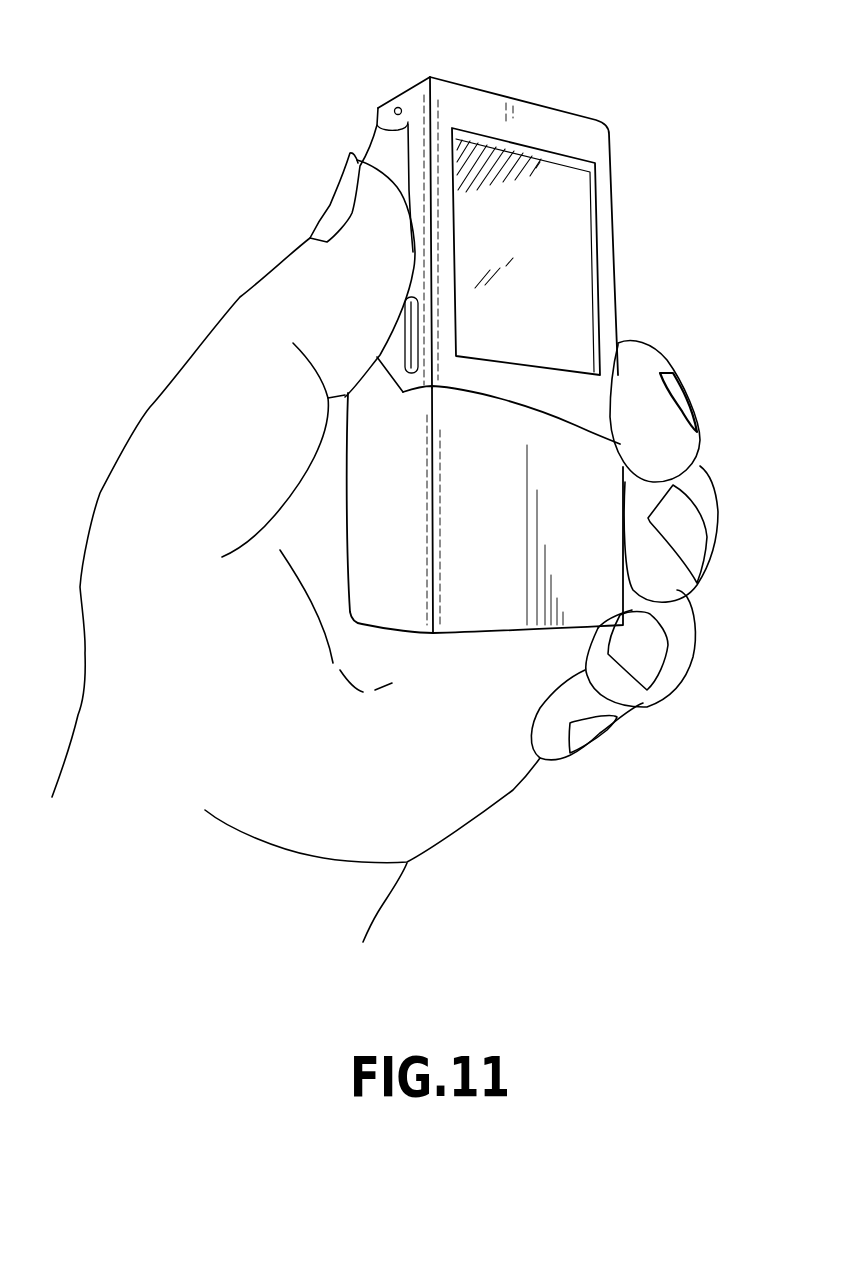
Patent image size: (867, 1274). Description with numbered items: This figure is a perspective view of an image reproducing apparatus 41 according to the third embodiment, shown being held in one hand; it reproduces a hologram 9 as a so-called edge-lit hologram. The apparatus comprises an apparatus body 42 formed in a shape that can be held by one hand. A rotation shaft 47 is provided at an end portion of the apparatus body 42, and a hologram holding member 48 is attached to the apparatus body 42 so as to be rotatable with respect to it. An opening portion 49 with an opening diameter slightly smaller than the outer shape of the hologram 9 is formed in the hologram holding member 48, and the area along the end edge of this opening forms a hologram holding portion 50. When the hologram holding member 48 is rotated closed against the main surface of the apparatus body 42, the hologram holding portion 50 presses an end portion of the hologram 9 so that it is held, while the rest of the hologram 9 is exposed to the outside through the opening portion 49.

The image reproducing apparatus 41 is at (470, 319).
The apparatus body 42 is at (530, 453).
The hologram holding member 48 is at (426, 196).
The hologram 9 is at (557, 252).
The rotation shaft 47 is at (400, 105).
The opening portion 49 is at (453, 298).
The hologram holding portion 50 is at (410, 173).